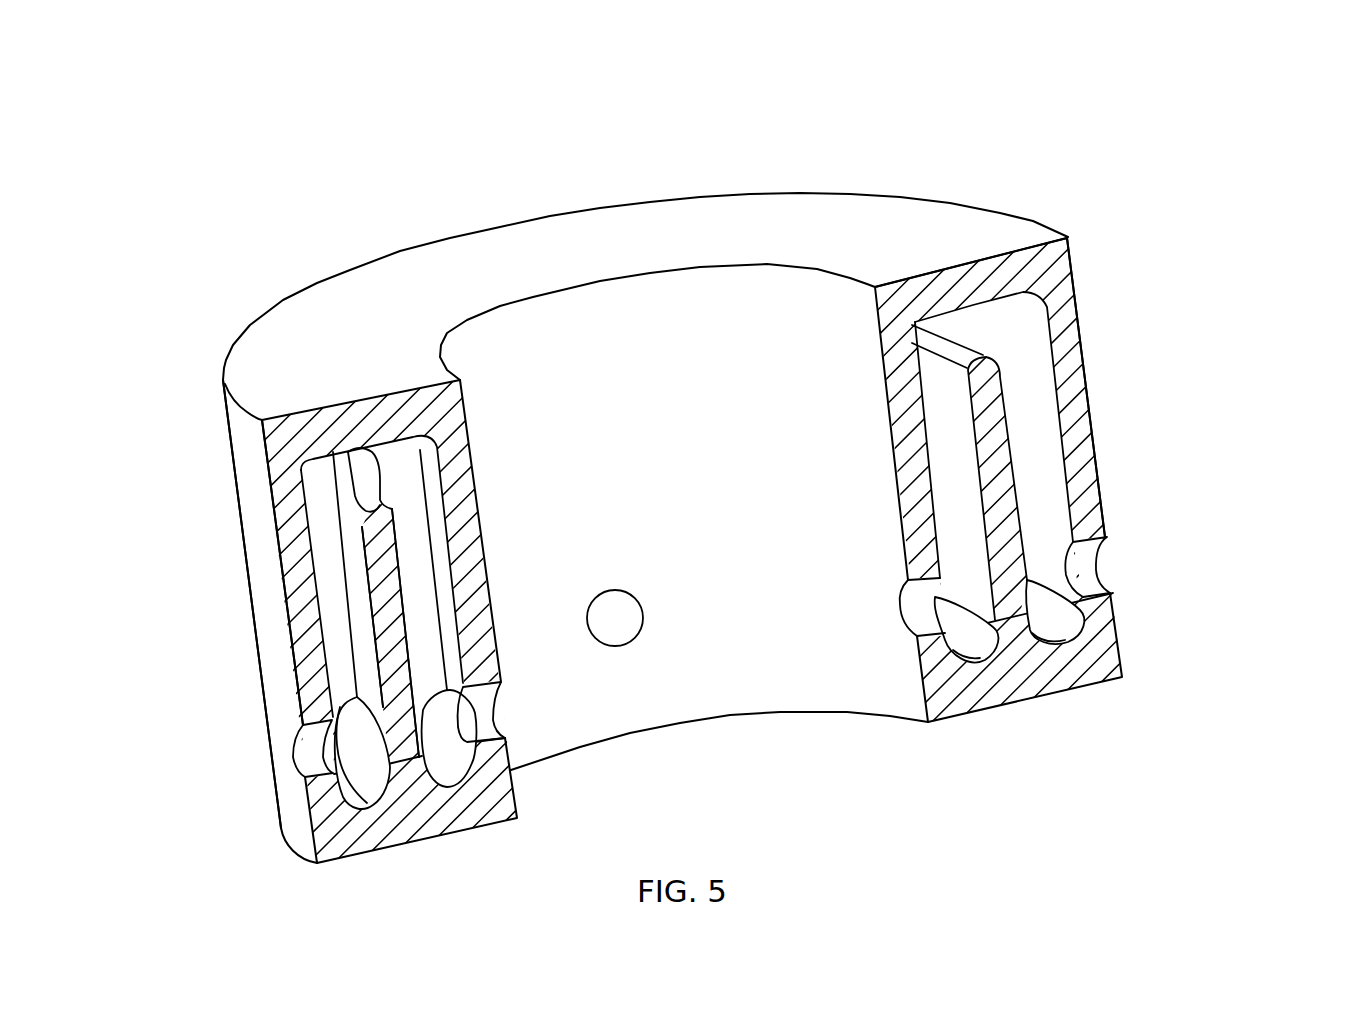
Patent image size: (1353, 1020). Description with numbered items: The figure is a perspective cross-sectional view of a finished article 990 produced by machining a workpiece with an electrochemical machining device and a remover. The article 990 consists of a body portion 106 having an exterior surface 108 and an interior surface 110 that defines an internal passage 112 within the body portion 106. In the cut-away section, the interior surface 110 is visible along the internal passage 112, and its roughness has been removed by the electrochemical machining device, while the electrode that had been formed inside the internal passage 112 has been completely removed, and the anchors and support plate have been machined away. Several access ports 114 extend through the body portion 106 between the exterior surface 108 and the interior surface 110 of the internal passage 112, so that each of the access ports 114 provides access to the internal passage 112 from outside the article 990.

The article 990 is at (317, 162).
The body portion 106 is at (280, 451).
The exterior surface 108 is at (1080, 293).
The interior surface 110 is at (968, 456).
The internal passage 112 is at (445, 762).
The access ports 114 is at (283, 743).